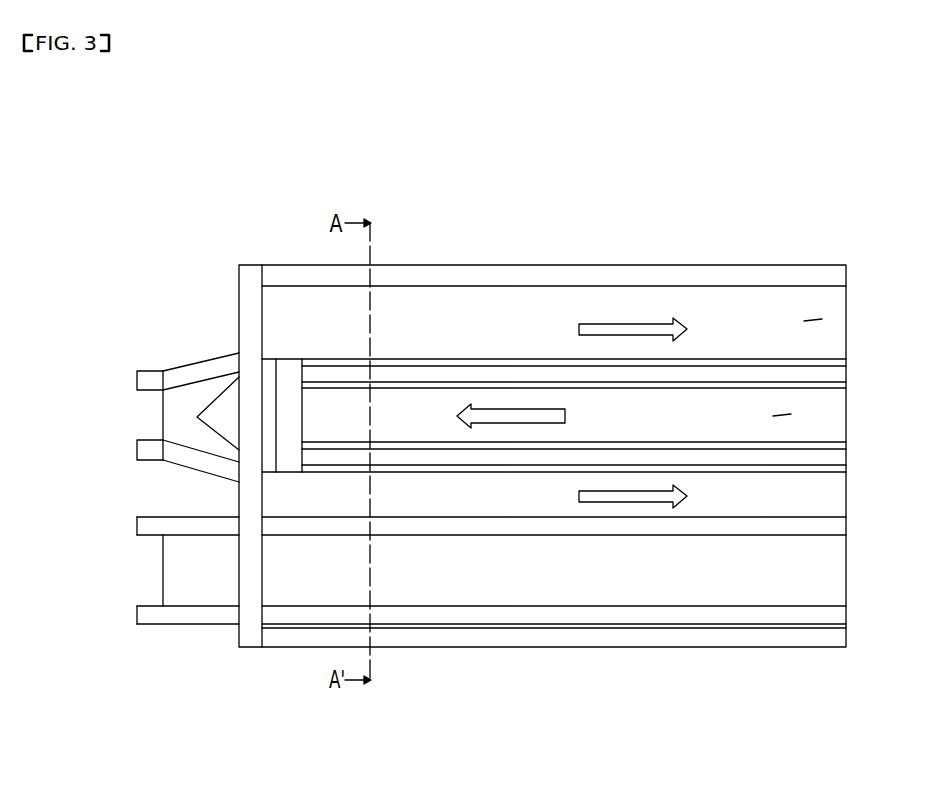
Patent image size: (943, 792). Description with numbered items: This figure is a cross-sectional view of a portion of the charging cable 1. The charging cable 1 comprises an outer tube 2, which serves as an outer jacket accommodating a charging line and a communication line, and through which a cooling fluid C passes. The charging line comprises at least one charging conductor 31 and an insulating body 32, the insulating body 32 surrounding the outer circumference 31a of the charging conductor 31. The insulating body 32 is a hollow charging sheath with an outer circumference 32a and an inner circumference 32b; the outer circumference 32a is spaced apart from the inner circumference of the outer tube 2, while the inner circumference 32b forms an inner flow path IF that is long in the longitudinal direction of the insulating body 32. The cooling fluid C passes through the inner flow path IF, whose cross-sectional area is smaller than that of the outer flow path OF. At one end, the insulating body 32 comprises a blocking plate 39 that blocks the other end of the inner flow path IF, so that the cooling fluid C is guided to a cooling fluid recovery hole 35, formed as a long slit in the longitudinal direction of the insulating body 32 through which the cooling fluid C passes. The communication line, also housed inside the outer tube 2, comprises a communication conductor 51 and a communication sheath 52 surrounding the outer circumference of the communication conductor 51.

The charging cable 1 is at (617, 199).
The outer tube 2 is at (715, 638).
The charging conductor 31 is at (468, 373).
The outer circumference of charging conductor 31a is at (522, 367).
The insulating body 32 is at (400, 359).
The outer circumference of insulating body 32a is at (738, 359).
The inner circumference of insulating body 32b is at (698, 388).
The cooling fluid recovery hole 35 is at (289, 358).
The blocking plate 39 is at (272, 402).
The communication conductor 51 is at (493, 588).
The communication sheath 52 is at (442, 617).
The cooling fluid C is at (762, 412).
The outer flow path OF is at (812, 320).
The inner flow path IF is at (782, 415).